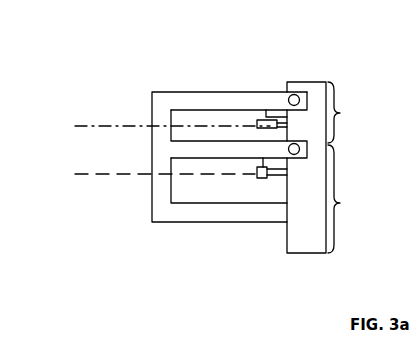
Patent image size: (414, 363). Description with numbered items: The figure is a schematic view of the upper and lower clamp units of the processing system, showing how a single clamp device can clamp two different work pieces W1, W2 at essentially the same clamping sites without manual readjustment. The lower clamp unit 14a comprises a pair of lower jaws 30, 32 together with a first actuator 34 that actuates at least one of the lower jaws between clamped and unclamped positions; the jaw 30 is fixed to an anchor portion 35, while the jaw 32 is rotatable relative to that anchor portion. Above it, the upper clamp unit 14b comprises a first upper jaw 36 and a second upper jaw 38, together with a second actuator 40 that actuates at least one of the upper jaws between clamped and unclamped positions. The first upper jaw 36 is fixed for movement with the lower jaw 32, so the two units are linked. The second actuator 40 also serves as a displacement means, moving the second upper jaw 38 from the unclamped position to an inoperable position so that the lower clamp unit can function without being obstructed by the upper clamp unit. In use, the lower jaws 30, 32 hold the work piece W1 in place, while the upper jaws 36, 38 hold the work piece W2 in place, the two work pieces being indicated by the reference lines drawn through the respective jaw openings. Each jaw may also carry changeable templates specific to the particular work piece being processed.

The jaw 30 is at (159, 204).
The jaw 32 is at (150, 167).
The first actuator 34 is at (258, 178).
The anchor portion 35 is at (309, 234).
The first upper jaw 36 is at (150, 132).
The second upper jaw 38 is at (150, 103).
The second actuator 40 is at (258, 120).
The lower clamp unit 14a is at (355, 199).
The upper clamp unit 14b is at (355, 112).
The work piece W1 is at (88, 176).
The work piece W2 is at (90, 125).